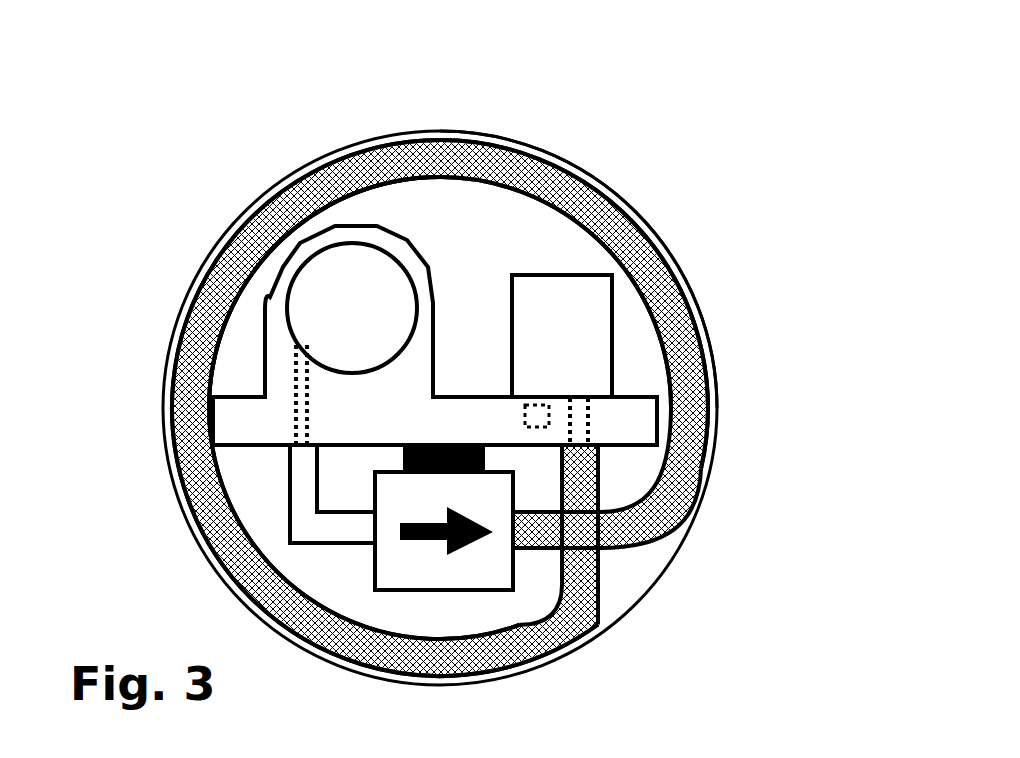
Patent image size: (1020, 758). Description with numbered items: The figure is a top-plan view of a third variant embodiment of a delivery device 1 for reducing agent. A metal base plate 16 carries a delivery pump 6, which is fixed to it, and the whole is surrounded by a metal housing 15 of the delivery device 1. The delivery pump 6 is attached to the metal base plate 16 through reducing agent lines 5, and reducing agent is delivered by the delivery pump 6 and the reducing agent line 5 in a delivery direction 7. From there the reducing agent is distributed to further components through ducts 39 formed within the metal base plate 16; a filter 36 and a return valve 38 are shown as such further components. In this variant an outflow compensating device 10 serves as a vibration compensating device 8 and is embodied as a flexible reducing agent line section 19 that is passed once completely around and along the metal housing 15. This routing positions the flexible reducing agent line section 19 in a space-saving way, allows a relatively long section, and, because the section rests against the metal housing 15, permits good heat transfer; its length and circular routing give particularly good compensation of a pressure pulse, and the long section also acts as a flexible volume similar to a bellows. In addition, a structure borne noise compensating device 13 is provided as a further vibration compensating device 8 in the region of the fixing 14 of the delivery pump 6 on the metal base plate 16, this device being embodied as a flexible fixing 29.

The delivery device 1 is at (230, 222).
The reducing agent line 5 is at (297, 527).
The delivery pump 6 is at (393, 588).
The delivery direction 7 is at (456, 572).
The vibration compensating device 8 is at (442, 442).
The outflow compensating device 10 is at (690, 383).
The structure borne noise compensating device 13 is at (597, 280).
The fixing 14 is at (403, 445).
The metal housing 15 is at (665, 245).
The metal base plate 16 is at (227, 422).
The flexible reducing agent line section 19 is at (680, 302).
The flexible fixing 29 is at (410, 443).
The filter 36 is at (312, 335).
The return valve 38 is at (595, 235).
The ducts 39 is at (588, 405).